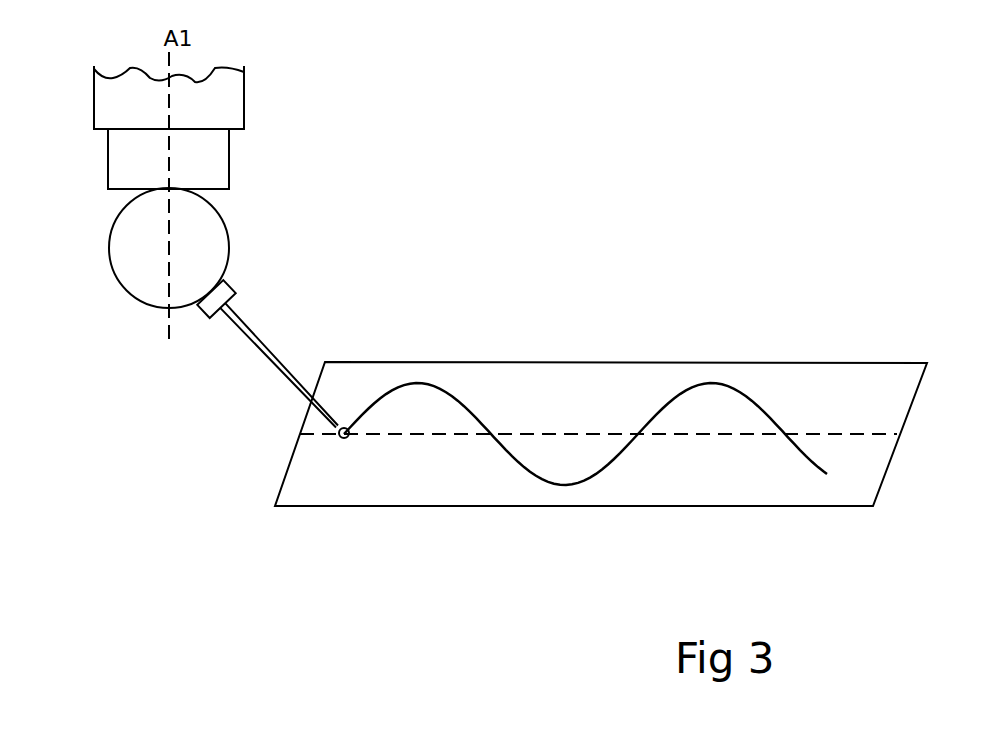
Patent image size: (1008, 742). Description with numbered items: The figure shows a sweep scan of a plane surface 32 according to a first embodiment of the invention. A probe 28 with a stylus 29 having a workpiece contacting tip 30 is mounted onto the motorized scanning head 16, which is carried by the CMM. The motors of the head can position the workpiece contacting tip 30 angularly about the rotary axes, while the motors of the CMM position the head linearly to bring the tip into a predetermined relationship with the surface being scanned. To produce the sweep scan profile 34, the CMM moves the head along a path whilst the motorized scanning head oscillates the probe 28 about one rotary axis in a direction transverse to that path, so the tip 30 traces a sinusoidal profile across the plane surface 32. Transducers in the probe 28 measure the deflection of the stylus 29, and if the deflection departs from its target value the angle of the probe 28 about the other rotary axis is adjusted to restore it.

The rotatable shaft / probe holder 16 is at (93, 193).
The probe 28 is at (238, 290).
The stylus 29 is at (265, 372).
The workpiece contacting tip 30 is at (340, 438).
The plane surface 32 is at (810, 376).
The sweep scan profile 34 is at (812, 462).